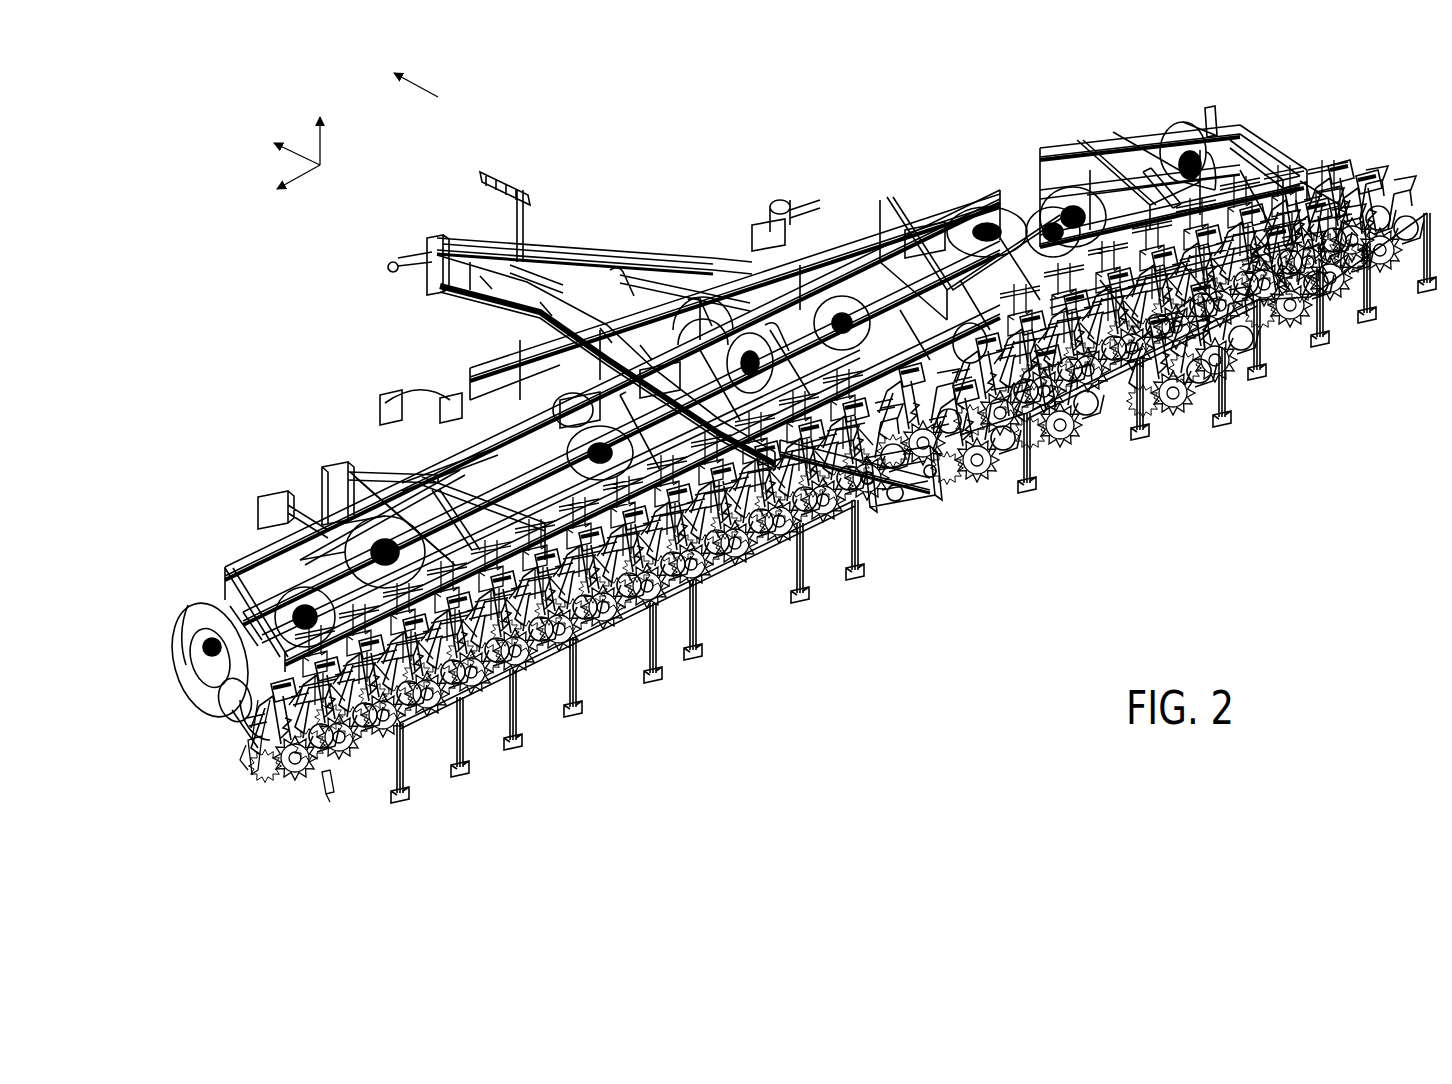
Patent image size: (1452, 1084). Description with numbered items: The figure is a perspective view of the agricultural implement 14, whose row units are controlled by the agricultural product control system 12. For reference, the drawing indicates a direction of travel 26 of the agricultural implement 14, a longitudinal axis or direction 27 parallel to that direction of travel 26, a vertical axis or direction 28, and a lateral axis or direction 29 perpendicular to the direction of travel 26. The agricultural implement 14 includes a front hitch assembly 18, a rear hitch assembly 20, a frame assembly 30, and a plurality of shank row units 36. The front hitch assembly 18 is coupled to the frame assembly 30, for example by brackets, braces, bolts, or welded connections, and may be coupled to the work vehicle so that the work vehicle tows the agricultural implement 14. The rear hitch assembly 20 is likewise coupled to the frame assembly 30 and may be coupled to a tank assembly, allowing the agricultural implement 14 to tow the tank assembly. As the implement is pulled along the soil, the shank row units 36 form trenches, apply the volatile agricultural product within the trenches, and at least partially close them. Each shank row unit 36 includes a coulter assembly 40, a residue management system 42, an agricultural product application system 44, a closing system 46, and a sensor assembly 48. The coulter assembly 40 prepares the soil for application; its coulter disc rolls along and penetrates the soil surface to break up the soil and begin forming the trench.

The agricultural product control system 12 is at (823, 70).
The agricultural implement 14 is at (722, 146).
The front hitch assembly 18 is at (457, 306).
The rear hitch assembly 20 is at (838, 482).
The direction of travel 26 is at (424, 86).
The longitudinal axis or direction 27 is at (300, 158).
The vertical axis or direction 28 is at (323, 151).
The lateral axis or direction 29 is at (300, 177).
The frame assembly 30 is at (921, 158).
The shank row unit 36 is at (822, 573).
The coulter assembly 40 is at (212, 724).
The residue management system 42 is at (250, 758).
The agricultural product application system 44 is at (286, 777).
The closing system 46 is at (324, 791).
The sensor assembly 48 is at (426, 801).